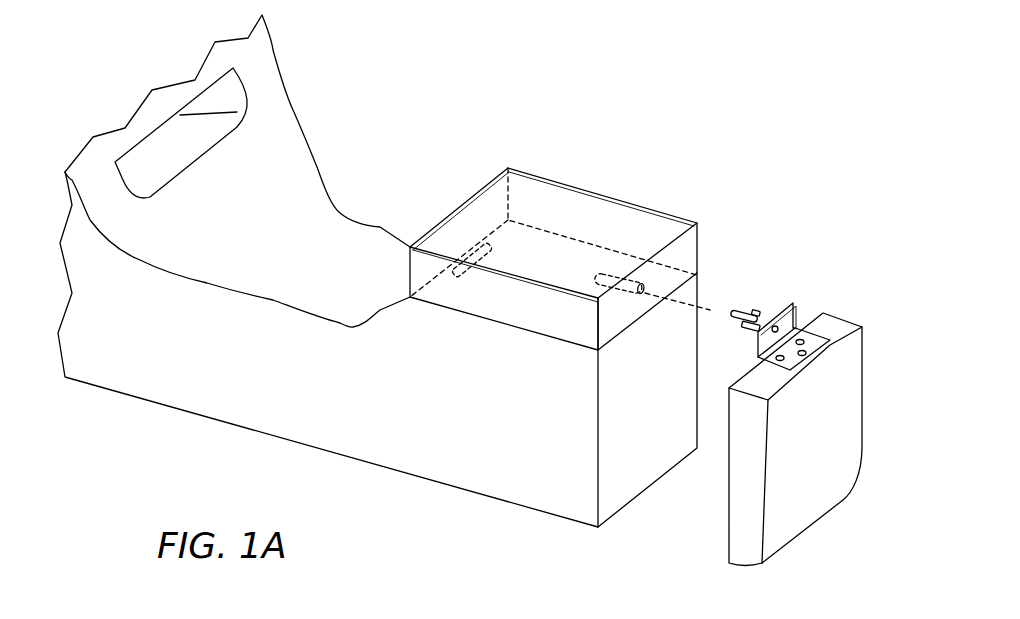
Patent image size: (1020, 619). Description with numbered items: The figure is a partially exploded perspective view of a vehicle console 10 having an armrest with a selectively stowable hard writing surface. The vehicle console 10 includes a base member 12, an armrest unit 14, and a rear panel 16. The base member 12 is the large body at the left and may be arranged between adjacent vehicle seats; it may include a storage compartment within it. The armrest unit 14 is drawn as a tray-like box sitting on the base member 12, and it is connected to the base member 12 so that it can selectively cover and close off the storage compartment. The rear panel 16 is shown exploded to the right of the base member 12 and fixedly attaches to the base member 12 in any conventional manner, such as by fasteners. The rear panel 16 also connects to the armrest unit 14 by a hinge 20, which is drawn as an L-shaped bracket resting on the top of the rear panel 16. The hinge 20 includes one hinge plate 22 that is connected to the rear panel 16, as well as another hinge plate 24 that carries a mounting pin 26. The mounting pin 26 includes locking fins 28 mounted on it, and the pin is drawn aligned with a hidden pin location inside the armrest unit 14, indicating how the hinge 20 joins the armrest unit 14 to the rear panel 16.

The vehicle console 10 is at (774, 93).
The base member 12 is at (460, 440).
The armrest unit 14 is at (610, 187).
The rear panel 16 is at (810, 497).
The hinge 20 is at (833, 318).
The hinge plate 22 is at (838, 350).
The hinge plate 24 is at (792, 302).
The mounting pin 26 is at (734, 311).
The locking fins 28 is at (761, 316).